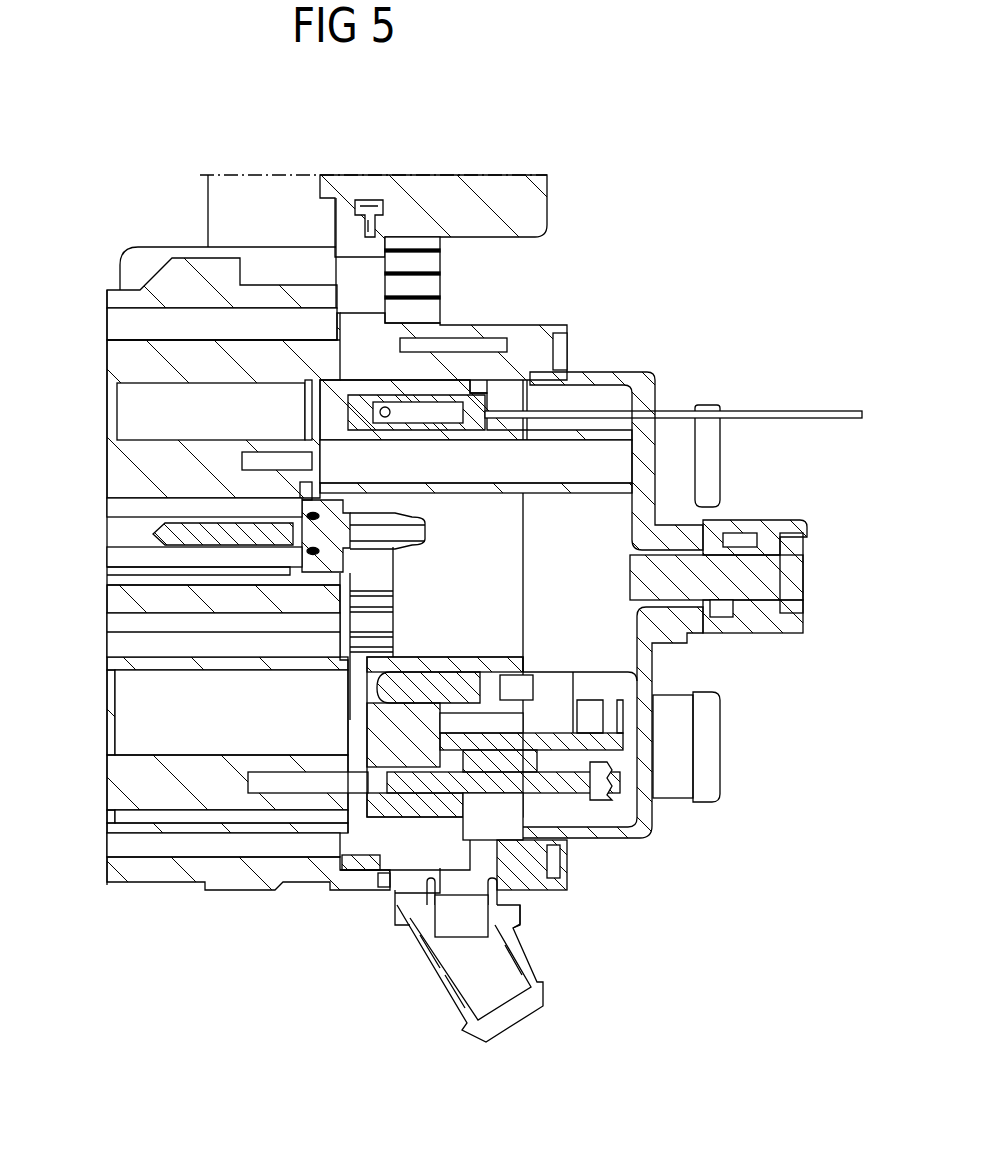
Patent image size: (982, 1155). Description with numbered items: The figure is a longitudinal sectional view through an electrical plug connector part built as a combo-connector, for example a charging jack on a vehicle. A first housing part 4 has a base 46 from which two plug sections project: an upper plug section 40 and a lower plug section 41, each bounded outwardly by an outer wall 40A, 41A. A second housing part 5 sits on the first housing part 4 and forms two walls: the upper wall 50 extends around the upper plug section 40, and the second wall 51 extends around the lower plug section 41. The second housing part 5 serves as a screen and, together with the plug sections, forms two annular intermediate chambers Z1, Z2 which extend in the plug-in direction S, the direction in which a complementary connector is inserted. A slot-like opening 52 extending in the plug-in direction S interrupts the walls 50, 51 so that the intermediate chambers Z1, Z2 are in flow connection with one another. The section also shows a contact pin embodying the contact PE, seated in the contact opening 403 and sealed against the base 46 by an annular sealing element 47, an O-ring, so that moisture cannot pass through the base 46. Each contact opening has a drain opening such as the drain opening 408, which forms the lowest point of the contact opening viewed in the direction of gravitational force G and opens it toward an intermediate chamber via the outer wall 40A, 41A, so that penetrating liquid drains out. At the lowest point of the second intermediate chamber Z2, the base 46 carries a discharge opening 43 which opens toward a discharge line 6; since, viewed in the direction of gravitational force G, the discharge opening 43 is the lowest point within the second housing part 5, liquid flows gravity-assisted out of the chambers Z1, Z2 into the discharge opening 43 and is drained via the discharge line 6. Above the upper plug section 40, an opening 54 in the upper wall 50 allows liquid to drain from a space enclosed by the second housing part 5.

The first housing part 4 is at (490, 322).
The second housing part 5 is at (240, 890).
The discharge line 6 is at (458, 1007).
The upper plug section 40 is at (118, 470).
The outer wall of the upper plug section 40A is at (197, 340).
The lower plug section 41 is at (120, 778).
The outer wall of the lower plug section 41A is at (205, 833).
The discharge opening 43 is at (398, 855).
The base 46 is at (348, 623).
The annular sealing element 47 is at (293, 514).
The upper wall 50 is at (118, 297).
The second wall 51 is at (153, 880).
The slot-like opening 52 is at (175, 622).
The opening 54 is at (353, 305).
The contact opening 403 is at (120, 558).
The drain opening 408 is at (283, 568).
The contact PE is at (157, 533).
The plug-in direction S is at (95, 413).
The direction of gravitational force G is at (35, 482).
The first intermediate chamber Z1 is at (125, 327).
The second intermediate chamber Z2 is at (123, 845).